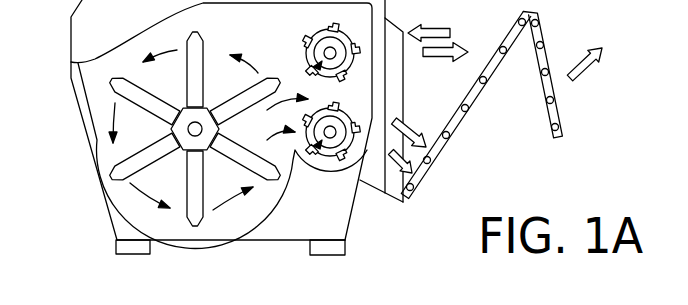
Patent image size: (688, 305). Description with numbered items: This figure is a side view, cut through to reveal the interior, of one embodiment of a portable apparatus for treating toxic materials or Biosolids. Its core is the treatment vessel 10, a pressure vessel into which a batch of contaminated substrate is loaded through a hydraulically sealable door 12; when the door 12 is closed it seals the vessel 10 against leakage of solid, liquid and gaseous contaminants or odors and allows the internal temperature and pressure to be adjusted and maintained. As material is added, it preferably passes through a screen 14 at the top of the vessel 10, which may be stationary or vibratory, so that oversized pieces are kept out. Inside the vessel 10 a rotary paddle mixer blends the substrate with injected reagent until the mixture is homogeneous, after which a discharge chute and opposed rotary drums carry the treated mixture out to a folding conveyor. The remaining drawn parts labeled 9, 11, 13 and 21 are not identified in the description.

The housing 9 is at (315, 215).
The treatment vessel 10 is at (193, 241).
The rotor with vanes 11 is at (163, 129).
The hydraulically sealable door 12 is at (317, 92).
The discharge duct 13 is at (403, 95).
The screen 14 is at (520, 67).
The vane 21 is at (190, 143).